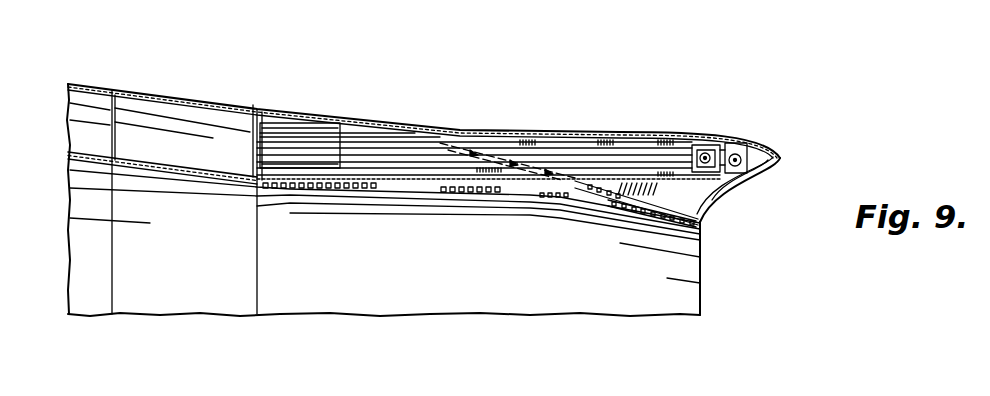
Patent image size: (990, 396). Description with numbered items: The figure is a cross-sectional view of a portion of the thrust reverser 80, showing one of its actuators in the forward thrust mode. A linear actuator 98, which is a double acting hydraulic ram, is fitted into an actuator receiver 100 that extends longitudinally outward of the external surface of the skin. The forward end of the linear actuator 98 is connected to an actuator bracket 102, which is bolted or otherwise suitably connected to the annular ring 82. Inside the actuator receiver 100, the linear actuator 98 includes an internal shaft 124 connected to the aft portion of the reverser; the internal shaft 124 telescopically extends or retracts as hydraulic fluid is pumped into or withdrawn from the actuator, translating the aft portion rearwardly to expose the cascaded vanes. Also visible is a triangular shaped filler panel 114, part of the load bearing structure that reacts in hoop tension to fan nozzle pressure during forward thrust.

The thrust reverser 80 is at (492, 315).
The annular ring 82 is at (176, 99).
The linear actuator 98 is at (441, 142).
The actuator receiver 100 is at (550, 130).
The actuator bracket 102 is at (291, 147).
The triangular shaped filler panel 114 is at (443, 188).
The internal shaft 124 is at (723, 140).